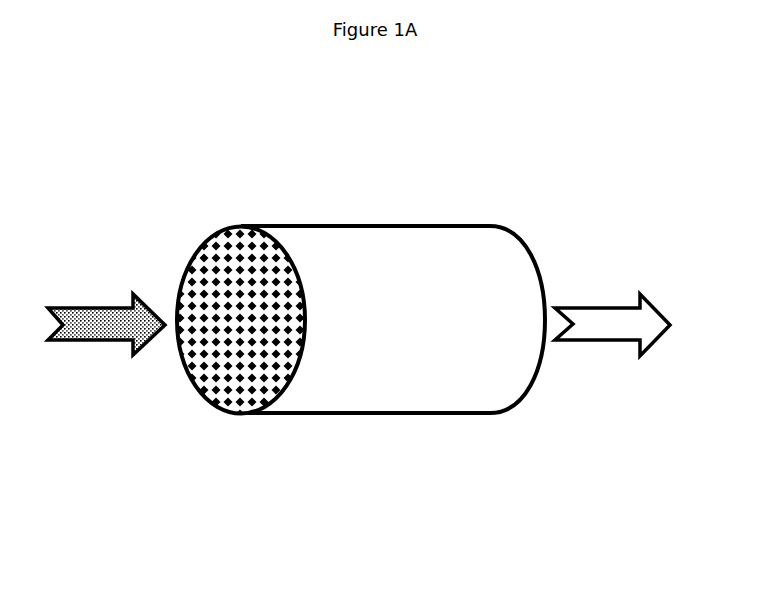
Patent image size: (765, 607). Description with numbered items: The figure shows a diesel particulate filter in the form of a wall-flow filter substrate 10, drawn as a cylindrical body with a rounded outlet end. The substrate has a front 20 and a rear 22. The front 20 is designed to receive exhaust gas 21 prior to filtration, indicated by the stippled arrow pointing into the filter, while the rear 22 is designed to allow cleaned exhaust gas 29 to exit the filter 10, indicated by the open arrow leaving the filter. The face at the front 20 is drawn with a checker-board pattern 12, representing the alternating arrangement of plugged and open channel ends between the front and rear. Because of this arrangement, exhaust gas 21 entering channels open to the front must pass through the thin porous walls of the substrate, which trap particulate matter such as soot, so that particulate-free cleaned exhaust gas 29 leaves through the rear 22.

The wall-flow filter substrate 10 is at (412, 288).
The checker-board pattern 12 is at (228, 283).
The front 20 is at (205, 387).
The exhaust gas 21 is at (92, 340).
The rear 22 is at (527, 385).
The cleaned exhaust gas 29 is at (590, 307).